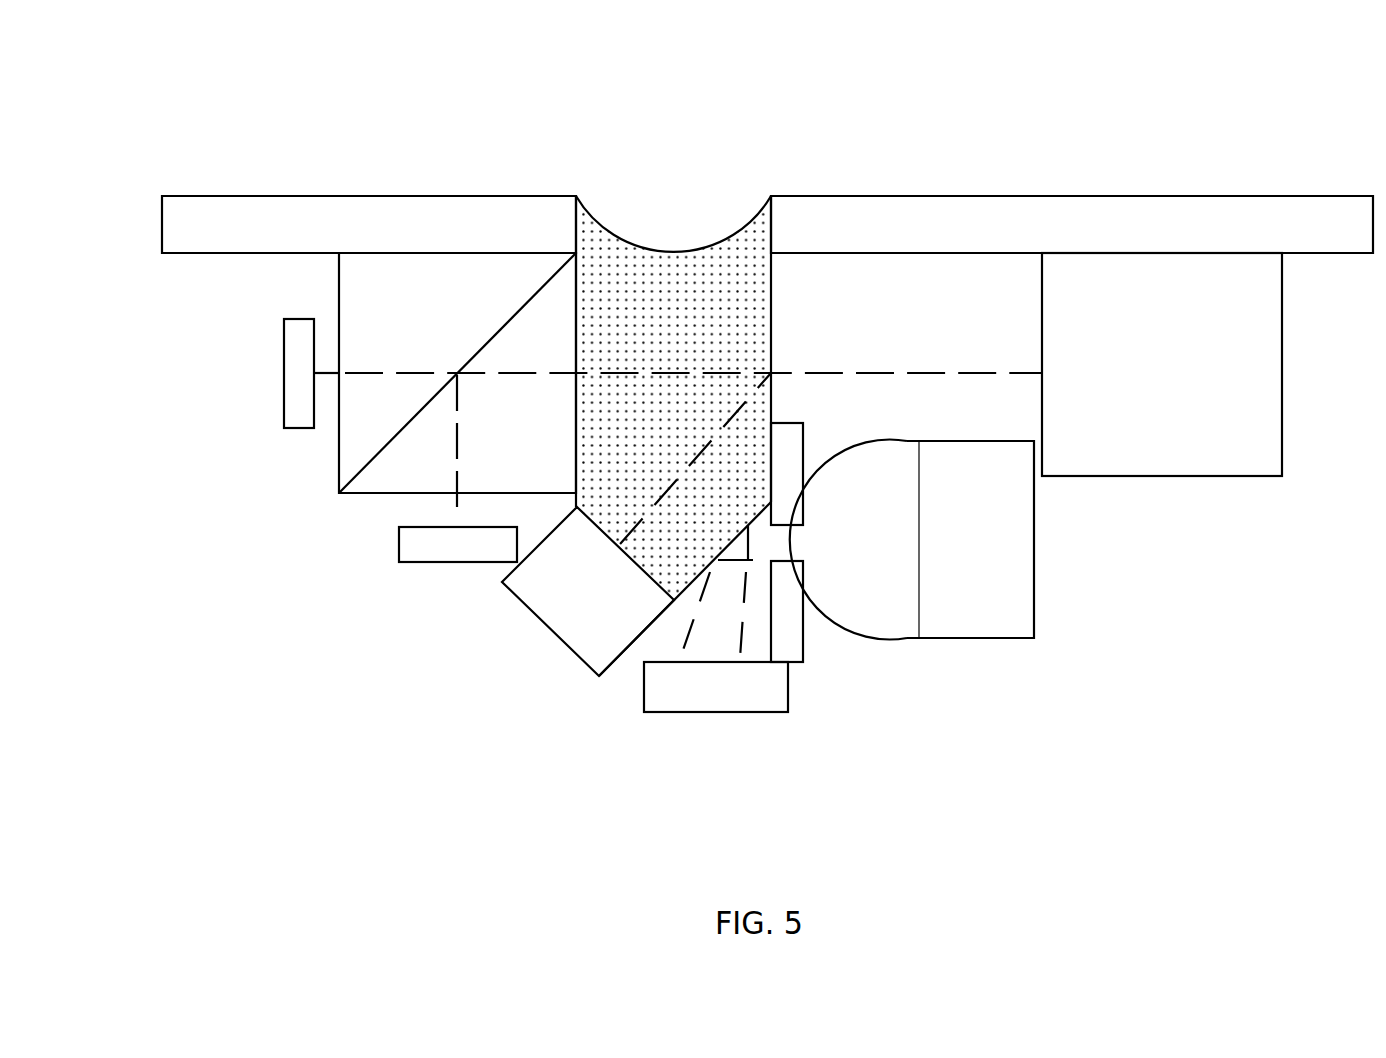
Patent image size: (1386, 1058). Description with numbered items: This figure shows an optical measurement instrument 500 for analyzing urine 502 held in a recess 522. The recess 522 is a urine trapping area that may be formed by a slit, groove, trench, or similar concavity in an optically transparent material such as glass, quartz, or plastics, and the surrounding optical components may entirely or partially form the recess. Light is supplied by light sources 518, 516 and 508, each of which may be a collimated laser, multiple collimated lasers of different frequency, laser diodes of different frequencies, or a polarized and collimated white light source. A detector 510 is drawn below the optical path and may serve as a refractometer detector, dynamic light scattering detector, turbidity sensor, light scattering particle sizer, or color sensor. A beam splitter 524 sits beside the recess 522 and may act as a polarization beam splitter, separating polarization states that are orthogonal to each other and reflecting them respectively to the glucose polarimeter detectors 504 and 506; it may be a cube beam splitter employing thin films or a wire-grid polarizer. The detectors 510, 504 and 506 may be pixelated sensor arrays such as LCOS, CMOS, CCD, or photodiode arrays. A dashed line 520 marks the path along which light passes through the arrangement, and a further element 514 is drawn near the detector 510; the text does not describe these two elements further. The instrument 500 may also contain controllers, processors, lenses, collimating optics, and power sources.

The measurement instrument 500 is at (265, 76).
The urine 502 is at (602, 233).
The glucose polarimeter detector 504 is at (284, 373).
The glucose polarimeter detector 506 is at (482, 558).
The light source 508 is at (610, 609).
The detector 510 is at (742, 702).
The lens elements 514 is at (781, 553).
The light source 516 is at (998, 556).
The light source 518 is at (1186, 388).
The optical axis 520 is at (928, 373).
The recess 522 is at (697, 325).
The beam splitter 524 is at (450, 312).